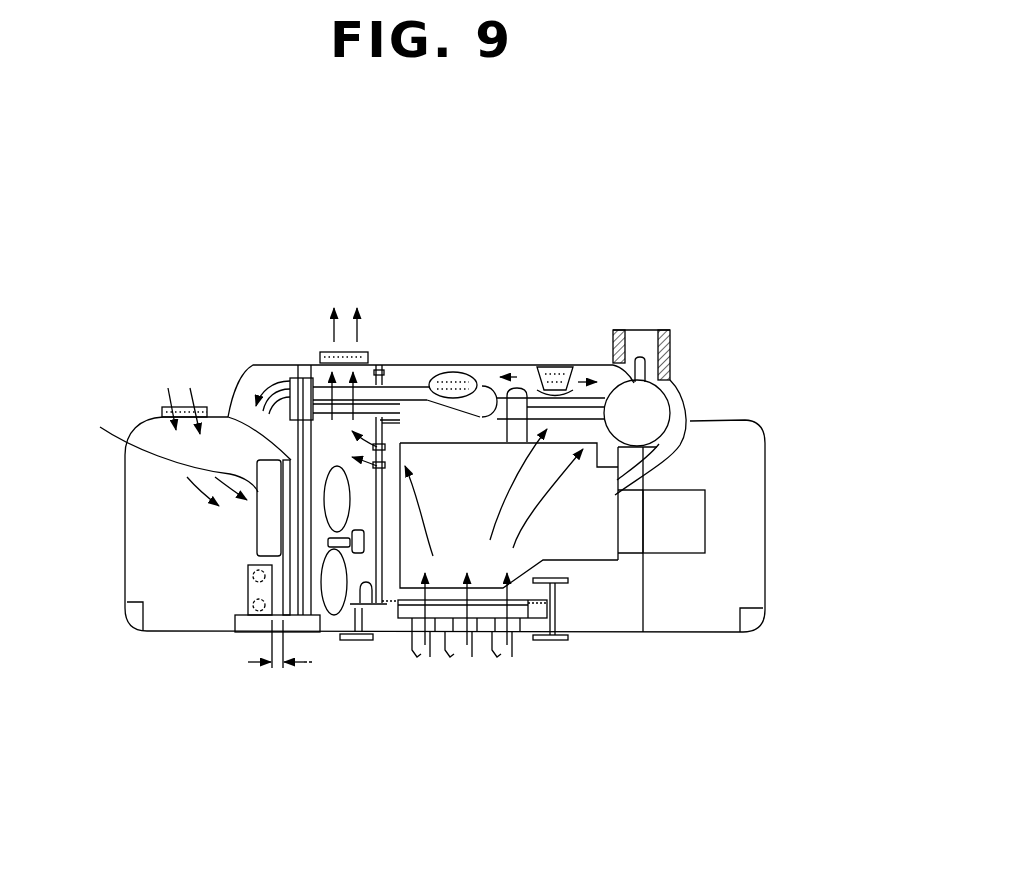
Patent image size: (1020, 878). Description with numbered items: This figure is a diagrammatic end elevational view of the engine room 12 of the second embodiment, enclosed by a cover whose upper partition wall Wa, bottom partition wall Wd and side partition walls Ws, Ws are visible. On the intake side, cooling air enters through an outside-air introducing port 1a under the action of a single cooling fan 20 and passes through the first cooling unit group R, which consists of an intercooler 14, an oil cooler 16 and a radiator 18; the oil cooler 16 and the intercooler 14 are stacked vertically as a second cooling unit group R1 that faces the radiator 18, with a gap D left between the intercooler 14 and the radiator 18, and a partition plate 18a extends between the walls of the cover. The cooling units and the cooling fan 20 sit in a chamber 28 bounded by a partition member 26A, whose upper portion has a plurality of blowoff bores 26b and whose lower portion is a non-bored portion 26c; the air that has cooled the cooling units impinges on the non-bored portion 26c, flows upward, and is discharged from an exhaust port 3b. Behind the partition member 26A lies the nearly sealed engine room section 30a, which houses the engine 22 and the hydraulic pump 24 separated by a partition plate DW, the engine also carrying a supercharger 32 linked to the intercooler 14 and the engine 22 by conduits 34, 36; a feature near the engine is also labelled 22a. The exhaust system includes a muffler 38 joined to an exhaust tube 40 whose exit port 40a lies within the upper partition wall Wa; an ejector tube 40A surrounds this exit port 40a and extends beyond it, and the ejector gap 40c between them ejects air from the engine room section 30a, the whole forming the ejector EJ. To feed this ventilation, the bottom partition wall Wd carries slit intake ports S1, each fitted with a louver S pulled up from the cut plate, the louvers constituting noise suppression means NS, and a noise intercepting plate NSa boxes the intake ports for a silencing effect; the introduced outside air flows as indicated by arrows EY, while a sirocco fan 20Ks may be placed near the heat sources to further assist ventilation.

The outside-air introducing port 1a is at (163, 407).
The radiator 18 is at (228, 415).
The oil cooler 16 is at (175, 482).
The chamber 28 is at (147, 498).
The second cooling unit group R1 is at (238, 517).
The side partition wall Ws is at (123, 563).
The partition plate 18a is at (298, 520).
The intercooler 14 is at (250, 577).
The first cooling unit group R is at (258, 639).
The gap D is at (281, 661).
The exhaust port 3b is at (325, 352).
The partition member 26A is at (381, 365).
The conduit 36 is at (404, 385).
The conduit 34 is at (460, 372).
The upper partition wall Wa is at (498, 365).
The supercharger 32 is at (523, 365).
The sirocco fan 20Ks is at (550, 365).
The nearly sealed engine room section 30a is at (598, 365).
The engine room 12 is at (603, 349).
The ejector tube 40A is at (620, 328).
The exit port 40a is at (642, 356).
The exhaust tube 40 is at (675, 332).
The ejector EJ is at (705, 337).
The ejector gap 40c is at (677, 376).
The muffler 38 is at (652, 420).
The arm 22a is at (663, 470).
The engine 22 is at (584, 548).
The hydraulic pump 24 is at (697, 528).
The blowoff bores 26b is at (400, 443).
The non-bored portion 26c is at (365, 634).
The cooling fan 20 is at (333, 617).
The noise suppression means NS is at (567, 722).
The louver S is at (417, 657).
The slit intake port S1 is at (430, 657).
The arrows EY is at (423, 523).
The noise intercepting plate NSa is at (490, 597).
The partition plate DW is at (643, 603).
The bottom partition wall Wd is at (627, 637).